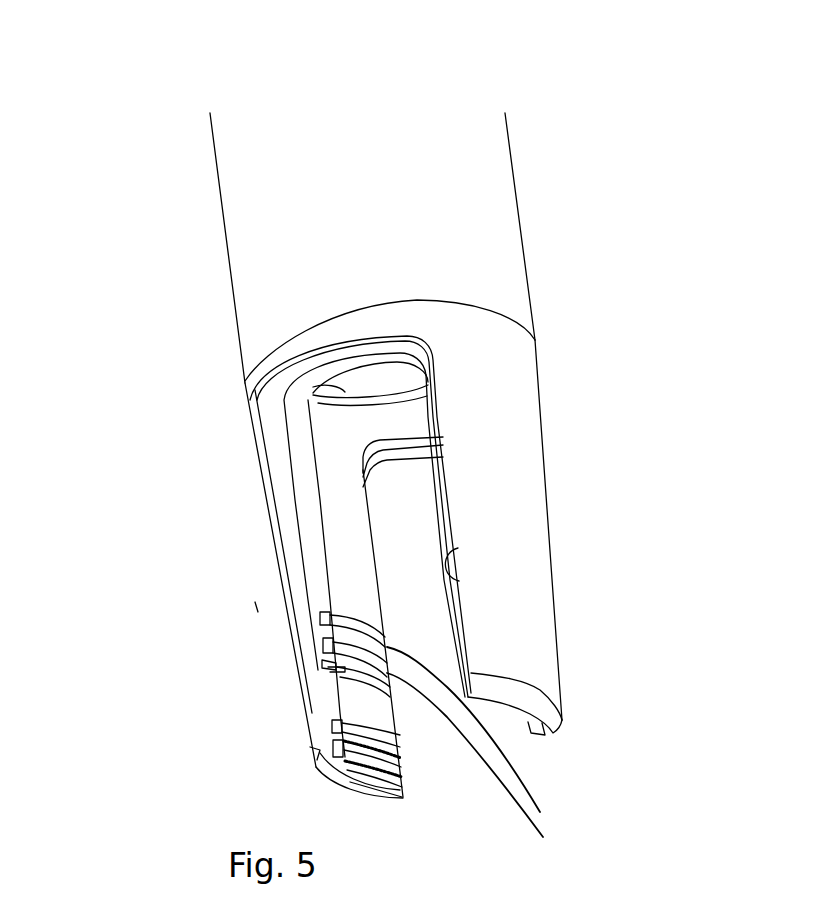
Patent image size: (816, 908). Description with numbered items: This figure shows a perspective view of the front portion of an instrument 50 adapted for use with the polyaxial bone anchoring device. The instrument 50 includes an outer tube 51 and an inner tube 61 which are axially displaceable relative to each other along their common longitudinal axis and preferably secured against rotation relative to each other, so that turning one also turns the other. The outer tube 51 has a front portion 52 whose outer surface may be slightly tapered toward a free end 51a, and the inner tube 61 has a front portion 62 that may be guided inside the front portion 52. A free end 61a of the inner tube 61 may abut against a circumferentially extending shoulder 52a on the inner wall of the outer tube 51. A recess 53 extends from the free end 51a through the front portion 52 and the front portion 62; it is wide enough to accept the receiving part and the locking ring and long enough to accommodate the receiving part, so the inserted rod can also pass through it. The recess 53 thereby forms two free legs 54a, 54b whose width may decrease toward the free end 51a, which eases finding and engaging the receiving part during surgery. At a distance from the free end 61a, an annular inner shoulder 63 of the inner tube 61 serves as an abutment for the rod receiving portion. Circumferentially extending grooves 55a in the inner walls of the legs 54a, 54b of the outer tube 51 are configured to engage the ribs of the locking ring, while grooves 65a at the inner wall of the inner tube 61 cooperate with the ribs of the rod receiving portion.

The instrument 50 is at (603, 107).
The outer tube 51 is at (508, 252).
The free end of the outer tube 51a is at (543, 723).
The front portion of the outer tube 52 is at (545, 488).
The circumferentially extending shoulder 52a is at (328, 667).
The recess 53 is at (460, 580).
The free leg 54a is at (255, 602).
The free leg 54b is at (531, 570).
The circumferentially extending groove 55a is at (400, 757).
The inner tube 61 is at (435, 400).
The free end of the inner tube 61a is at (323, 660).
The front portion of the inner tube 62 is at (308, 505).
The inner shoulder 63 is at (363, 381).
The circumferentially extending groove 65a is at (540, 812).